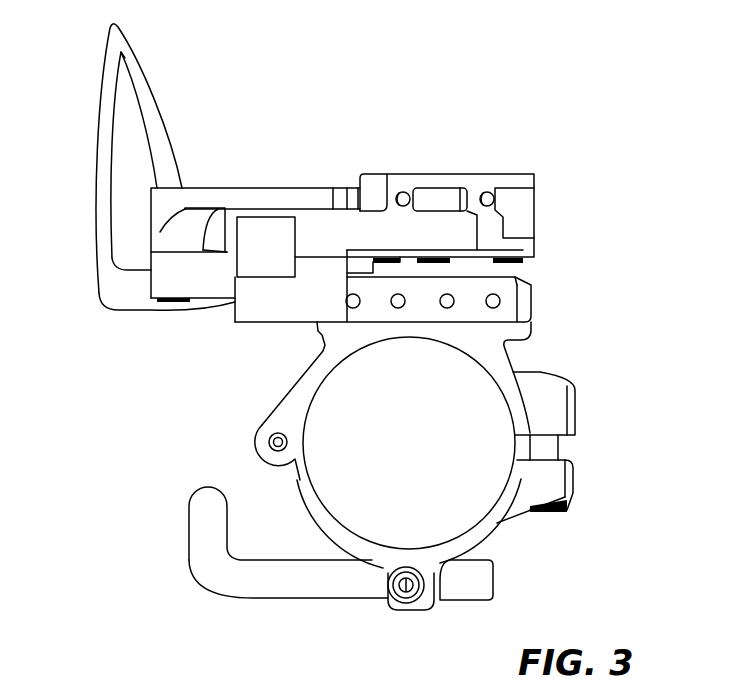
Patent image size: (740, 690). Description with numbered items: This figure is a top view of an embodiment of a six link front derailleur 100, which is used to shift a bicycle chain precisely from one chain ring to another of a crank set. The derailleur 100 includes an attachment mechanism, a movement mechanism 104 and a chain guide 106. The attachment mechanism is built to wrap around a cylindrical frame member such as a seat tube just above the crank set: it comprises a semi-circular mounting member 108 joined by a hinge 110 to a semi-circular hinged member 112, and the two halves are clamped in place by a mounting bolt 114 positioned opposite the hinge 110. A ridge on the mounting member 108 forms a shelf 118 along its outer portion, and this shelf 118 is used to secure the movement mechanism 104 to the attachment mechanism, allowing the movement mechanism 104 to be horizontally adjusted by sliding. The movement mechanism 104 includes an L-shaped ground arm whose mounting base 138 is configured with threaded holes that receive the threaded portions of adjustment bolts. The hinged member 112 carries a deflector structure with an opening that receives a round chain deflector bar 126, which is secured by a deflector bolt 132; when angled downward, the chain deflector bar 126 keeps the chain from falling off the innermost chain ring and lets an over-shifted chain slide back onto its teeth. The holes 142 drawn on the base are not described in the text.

The six link front derailleur 100 is at (445, 50).
The movement mechanism 104 is at (277, 174).
The chain guide 106 is at (118, 286).
The mounting member 108 is at (317, 385).
The hinge 110 is at (270, 442).
The hinged member 112 is at (335, 523).
The mounting bolt 114 is at (545, 448).
The shelf 118 is at (538, 314).
The chain deflector bar 126 is at (280, 585).
The deflector bolt 132 is at (390, 610).
The mounting base 138 is at (513, 293).
The apertures 142 is at (493, 308).